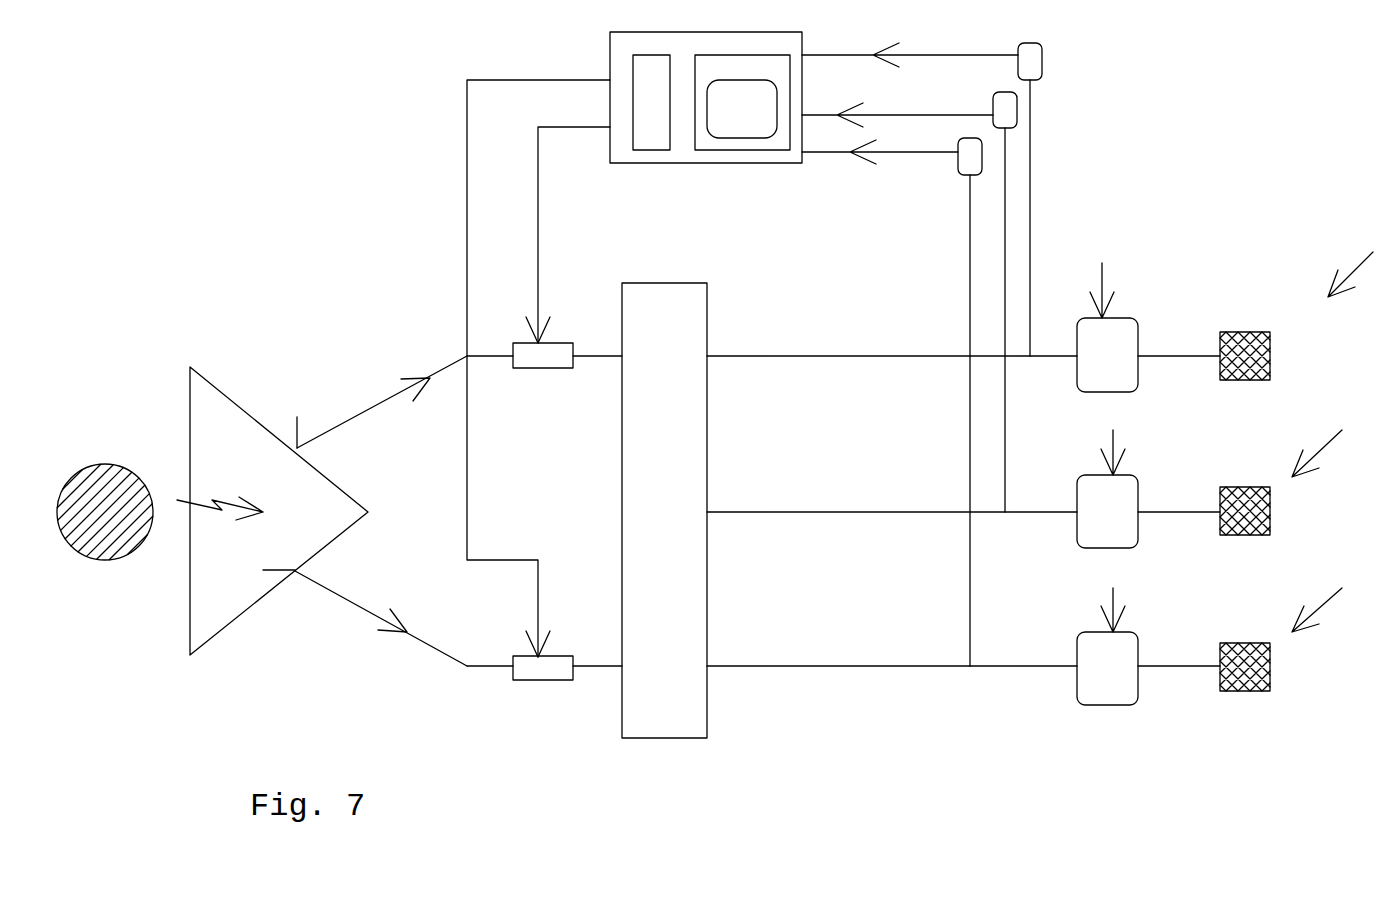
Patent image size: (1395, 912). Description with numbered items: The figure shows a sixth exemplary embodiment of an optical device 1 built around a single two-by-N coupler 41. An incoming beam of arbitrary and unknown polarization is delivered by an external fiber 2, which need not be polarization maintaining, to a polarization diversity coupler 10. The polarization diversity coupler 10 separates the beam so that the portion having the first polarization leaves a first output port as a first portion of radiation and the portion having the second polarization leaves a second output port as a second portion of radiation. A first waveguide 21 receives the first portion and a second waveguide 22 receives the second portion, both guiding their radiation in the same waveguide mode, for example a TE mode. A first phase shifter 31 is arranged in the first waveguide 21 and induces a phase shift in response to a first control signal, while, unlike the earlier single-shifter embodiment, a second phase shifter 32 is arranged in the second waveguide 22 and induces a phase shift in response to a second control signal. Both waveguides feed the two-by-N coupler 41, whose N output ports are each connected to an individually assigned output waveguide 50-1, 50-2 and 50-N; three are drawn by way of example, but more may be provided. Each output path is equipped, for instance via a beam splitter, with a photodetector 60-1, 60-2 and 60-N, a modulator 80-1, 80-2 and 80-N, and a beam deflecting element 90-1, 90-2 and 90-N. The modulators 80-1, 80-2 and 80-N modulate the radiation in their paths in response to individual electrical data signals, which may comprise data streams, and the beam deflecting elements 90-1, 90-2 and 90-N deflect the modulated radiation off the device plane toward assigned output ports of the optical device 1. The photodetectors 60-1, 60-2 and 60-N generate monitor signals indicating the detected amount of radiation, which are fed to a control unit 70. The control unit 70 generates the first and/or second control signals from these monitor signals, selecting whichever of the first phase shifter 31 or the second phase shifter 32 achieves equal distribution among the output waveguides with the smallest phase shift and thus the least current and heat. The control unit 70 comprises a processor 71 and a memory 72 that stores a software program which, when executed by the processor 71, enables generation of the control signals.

The optical device 1 is at (422, 208).
The external fiber 2 is at (105, 488).
The polarization diversity coupler 10 is at (250, 413).
The first waveguide 21 is at (362, 418).
The second waveguide 22 is at (345, 595).
The first phase shifter 31 is at (550, 356).
The second phase shifter 32 is at (538, 680).
The 2×N coupler 41 is at (647, 500).
The output waveguide 50-1 is at (815, 353).
The output waveguide 50-2 is at (838, 510).
The output waveguide 50-N is at (837, 663).
The photodetector 60-1 is at (1030, 68).
The photodetector 60-2 is at (1003, 112).
The photodetector 60-N is at (968, 163).
The control unit 70 is at (610, 55).
The processor 71 is at (645, 138).
The memory 72 is at (728, 150).
The modulator 80-1 is at (1148, 355).
The modulator 80-2 is at (1148, 511).
The modulator 80-N is at (1148, 668).
The beam deflecting element 90-1 is at (1243, 353).
The beam deflecting element 90-2 is at (1257, 512).
The beam deflecting element 90-N is at (1257, 667).